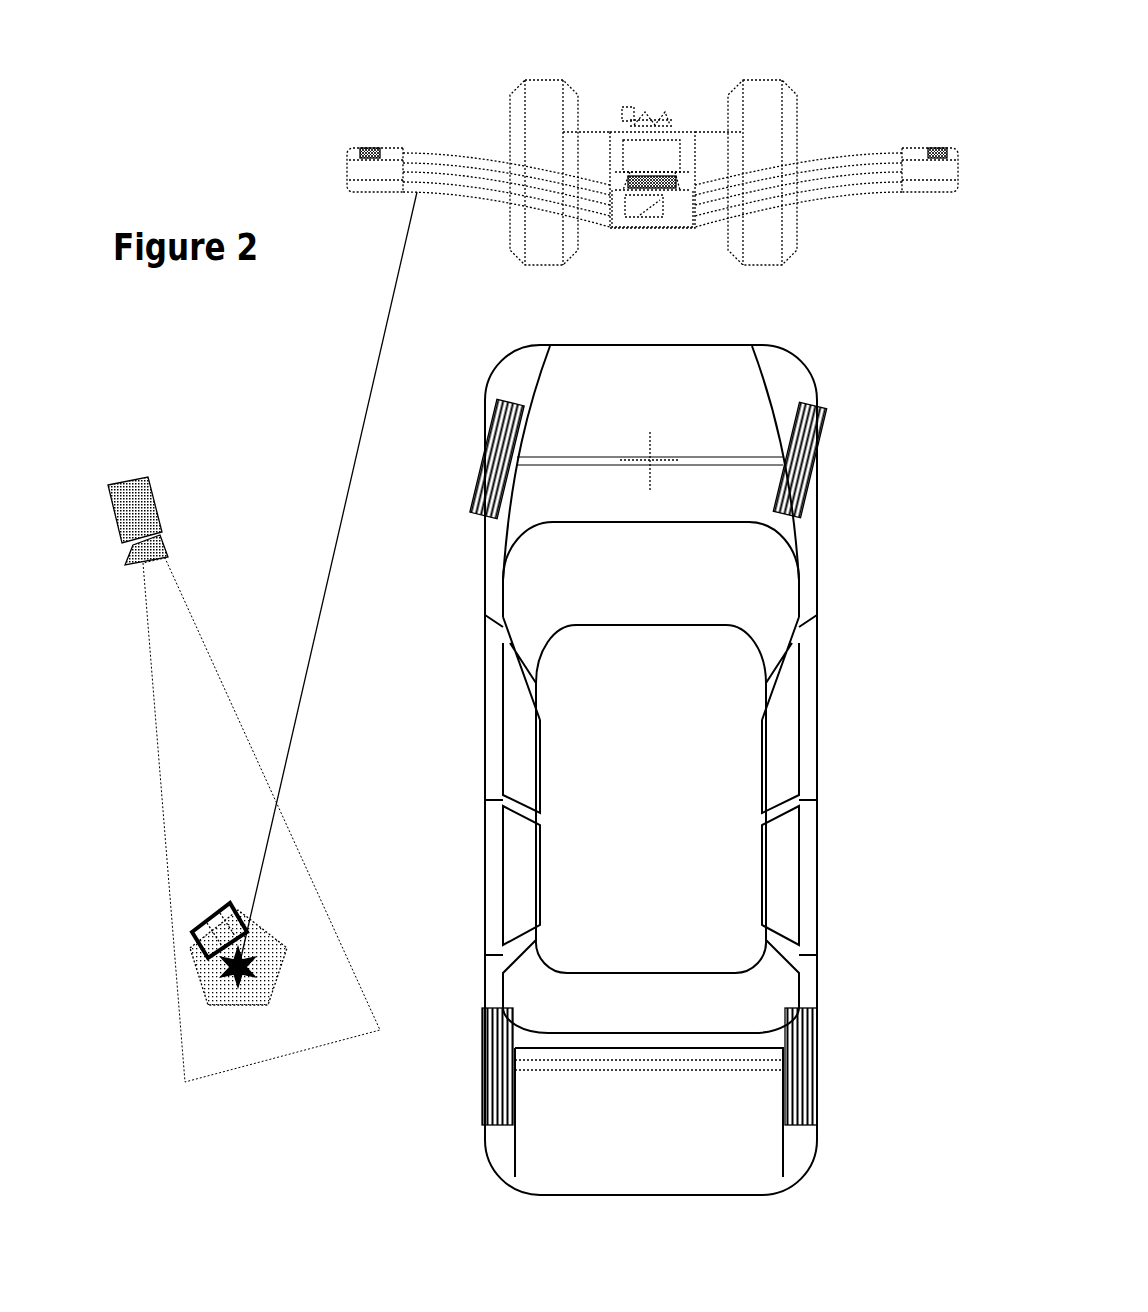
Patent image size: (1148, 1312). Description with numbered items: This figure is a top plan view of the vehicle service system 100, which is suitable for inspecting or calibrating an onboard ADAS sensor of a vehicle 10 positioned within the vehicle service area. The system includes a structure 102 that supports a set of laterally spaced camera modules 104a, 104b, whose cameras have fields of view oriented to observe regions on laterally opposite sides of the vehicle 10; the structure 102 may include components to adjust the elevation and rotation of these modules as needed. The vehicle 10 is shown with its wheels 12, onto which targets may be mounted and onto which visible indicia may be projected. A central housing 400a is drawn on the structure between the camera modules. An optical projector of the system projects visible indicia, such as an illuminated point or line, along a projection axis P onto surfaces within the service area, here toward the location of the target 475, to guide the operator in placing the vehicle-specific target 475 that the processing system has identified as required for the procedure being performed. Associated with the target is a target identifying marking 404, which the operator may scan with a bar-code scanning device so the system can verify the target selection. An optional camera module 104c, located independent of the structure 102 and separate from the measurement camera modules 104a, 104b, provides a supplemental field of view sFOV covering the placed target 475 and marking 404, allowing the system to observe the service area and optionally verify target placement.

The vehicle 10 is at (840, 897).
The wheels 12 is at (470, 473).
The vehicle service system 100 is at (591, 164).
The structure 102 is at (670, 130).
The camera module 104a is at (922, 158).
The camera module 104b is at (377, 167).
The optional camera module 104c is at (165, 502).
The actuator housing 400a is at (667, 228).
The target identifying marking 404 is at (210, 920).
The target 475 is at (280, 980).
The projection axis P is at (370, 398).
The supplemental field of view sFOV is at (312, 887).